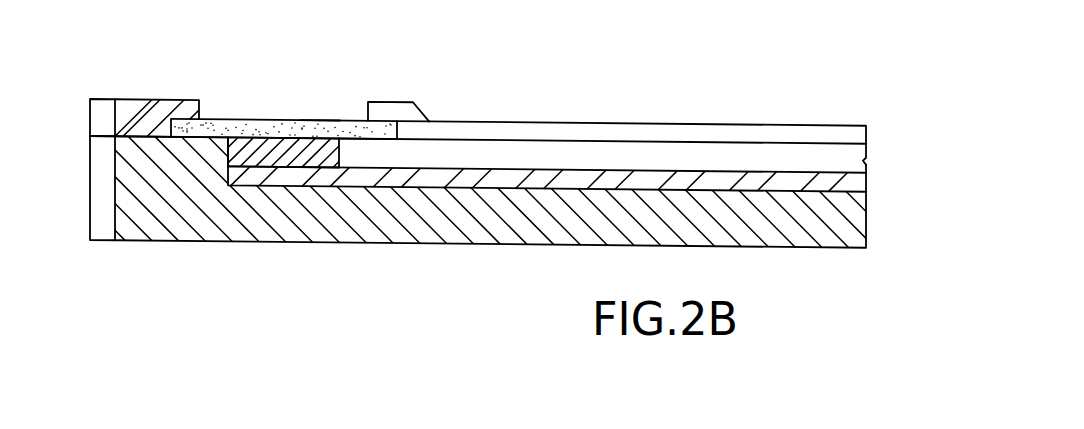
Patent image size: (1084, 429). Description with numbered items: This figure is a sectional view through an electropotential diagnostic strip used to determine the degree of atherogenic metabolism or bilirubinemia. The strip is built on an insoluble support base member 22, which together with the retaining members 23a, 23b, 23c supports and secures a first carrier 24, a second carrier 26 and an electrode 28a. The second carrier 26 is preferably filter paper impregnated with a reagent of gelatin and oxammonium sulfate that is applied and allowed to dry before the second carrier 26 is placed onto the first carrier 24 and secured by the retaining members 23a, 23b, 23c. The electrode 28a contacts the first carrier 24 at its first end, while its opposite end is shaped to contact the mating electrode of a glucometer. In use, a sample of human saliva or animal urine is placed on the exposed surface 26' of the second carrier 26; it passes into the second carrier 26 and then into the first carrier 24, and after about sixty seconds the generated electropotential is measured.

The insoluble support base member 22 is at (552, 223).
The first carrier 24 is at (247, 156).
The second carrier 26 is at (333, 70).
The exposed surface 26' is at (284, 91).
The electrode 28a is at (427, 173).
The retaining member 23a is at (137, 112).
The retaining member 23b is at (418, 114).
The retaining member 23c is at (682, 158).